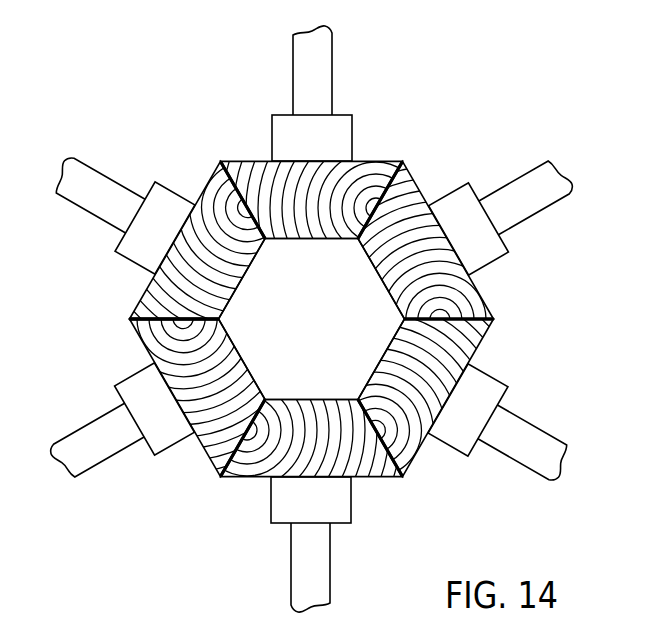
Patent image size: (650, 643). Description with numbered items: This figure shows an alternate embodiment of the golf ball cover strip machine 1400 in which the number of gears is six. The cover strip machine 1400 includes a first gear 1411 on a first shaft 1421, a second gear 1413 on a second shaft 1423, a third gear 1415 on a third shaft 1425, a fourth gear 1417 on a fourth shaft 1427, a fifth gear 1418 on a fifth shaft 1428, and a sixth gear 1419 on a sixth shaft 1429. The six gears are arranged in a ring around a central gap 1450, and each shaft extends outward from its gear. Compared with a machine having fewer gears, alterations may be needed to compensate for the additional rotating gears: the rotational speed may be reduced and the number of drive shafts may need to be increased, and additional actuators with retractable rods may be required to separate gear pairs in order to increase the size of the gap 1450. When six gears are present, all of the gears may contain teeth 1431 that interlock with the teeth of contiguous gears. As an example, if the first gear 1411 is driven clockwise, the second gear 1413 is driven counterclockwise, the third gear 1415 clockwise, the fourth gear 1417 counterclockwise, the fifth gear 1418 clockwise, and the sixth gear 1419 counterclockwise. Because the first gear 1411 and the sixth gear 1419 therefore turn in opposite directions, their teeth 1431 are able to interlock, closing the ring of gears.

The golf ball cover strip machine 1400 is at (160, 100).
The first gear 1411 is at (372, 160).
The second gear 1413 is at (480, 293).
The third gear 1415 is at (478, 348).
The fourth gear 1417 is at (252, 478).
The fifth gear 1418 is at (195, 445).
The sixth gear 1419 is at (210, 183).
The first shaft 1421 is at (293, 73).
The second shaft 1423 is at (522, 173).
The third shaft 1425 is at (550, 410).
The fourth shaft 1427 is at (332, 556).
The fifth shaft 1428 is at (87, 423).
The sixth shaft 1429 is at (90, 213).
The teeth 1431 is at (147, 295).
The gap 1450 is at (300, 272).